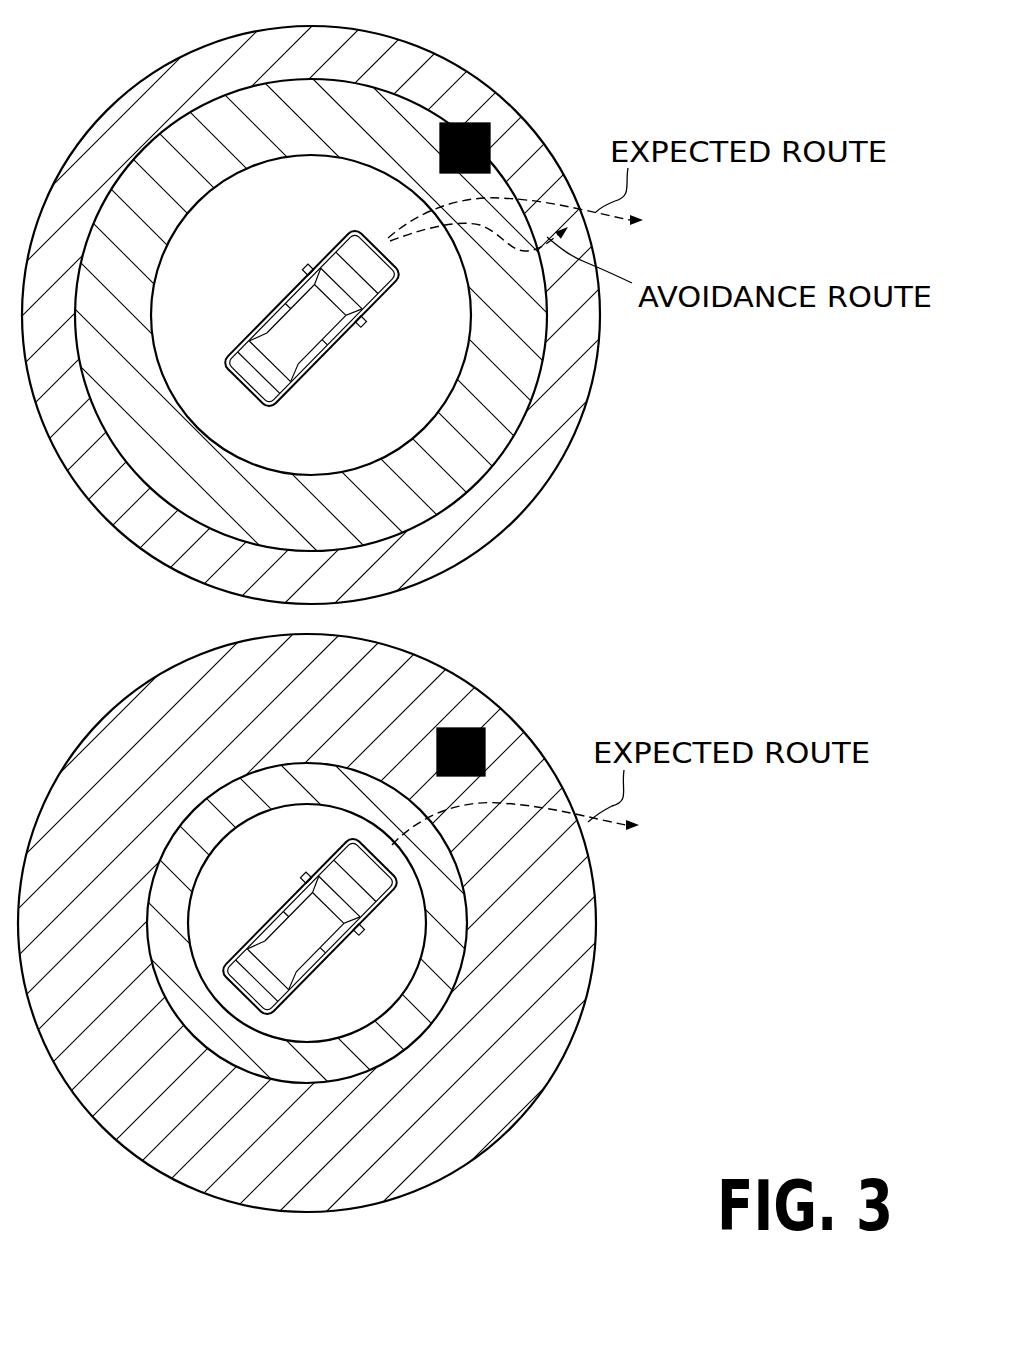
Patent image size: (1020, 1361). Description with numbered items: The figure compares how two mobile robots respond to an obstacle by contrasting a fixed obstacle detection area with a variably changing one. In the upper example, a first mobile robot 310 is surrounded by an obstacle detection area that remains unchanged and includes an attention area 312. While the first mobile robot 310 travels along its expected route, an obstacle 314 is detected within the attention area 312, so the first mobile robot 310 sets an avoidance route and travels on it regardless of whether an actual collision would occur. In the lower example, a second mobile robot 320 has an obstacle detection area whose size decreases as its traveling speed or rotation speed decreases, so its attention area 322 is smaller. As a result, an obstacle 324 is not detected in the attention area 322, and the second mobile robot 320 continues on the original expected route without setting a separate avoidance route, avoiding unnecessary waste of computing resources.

The first mobile robot 310 is at (350, 333).
The attention area 312 is at (529, 383).
The obstacle 314 is at (473, 121).
The second mobile robot 320 is at (350, 933).
The attention area 322 is at (456, 979).
The obstacle 324 is at (470, 727).